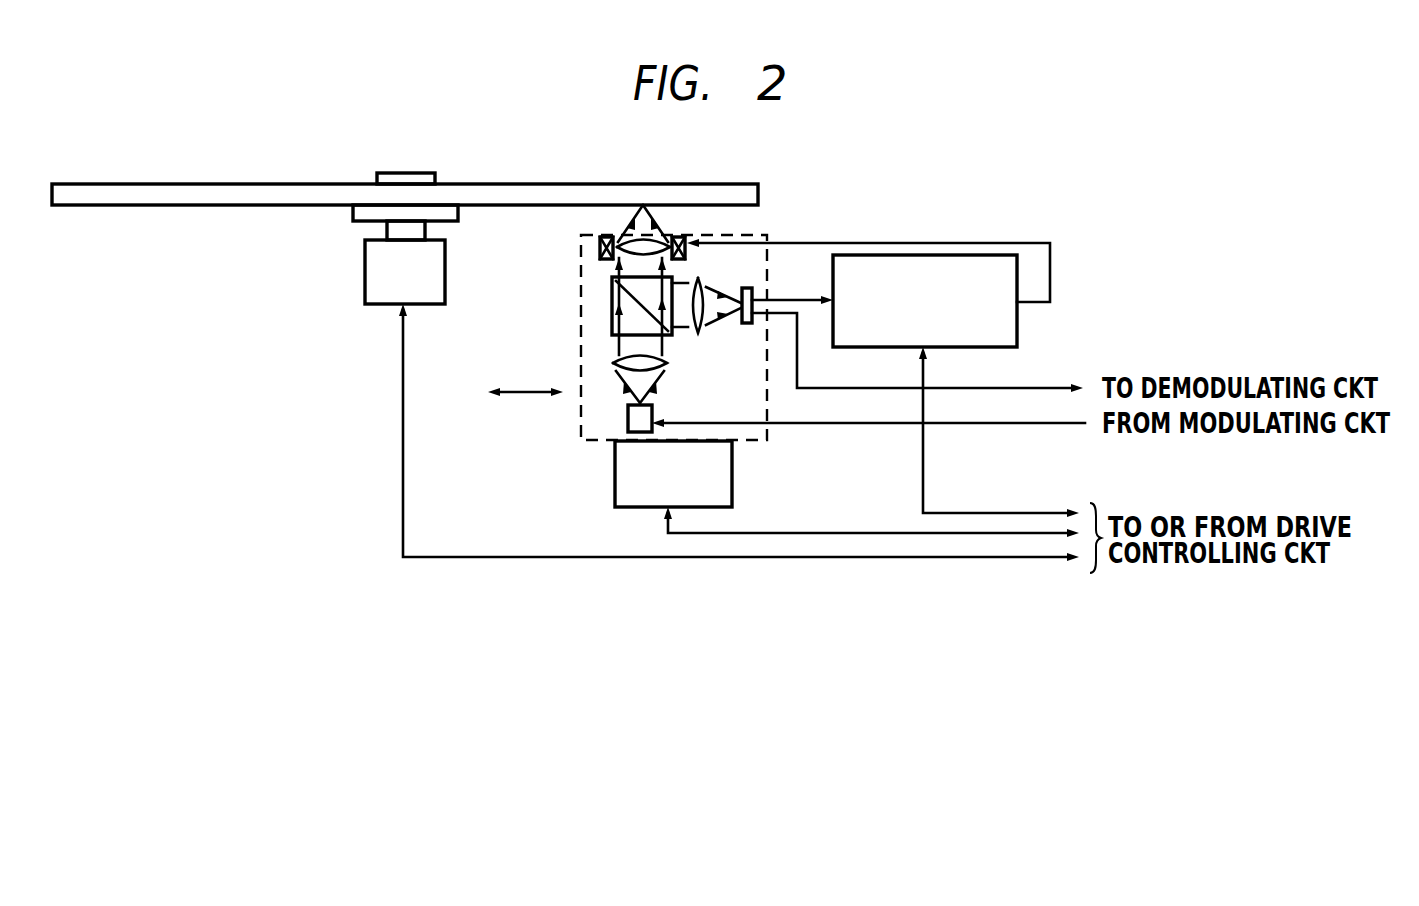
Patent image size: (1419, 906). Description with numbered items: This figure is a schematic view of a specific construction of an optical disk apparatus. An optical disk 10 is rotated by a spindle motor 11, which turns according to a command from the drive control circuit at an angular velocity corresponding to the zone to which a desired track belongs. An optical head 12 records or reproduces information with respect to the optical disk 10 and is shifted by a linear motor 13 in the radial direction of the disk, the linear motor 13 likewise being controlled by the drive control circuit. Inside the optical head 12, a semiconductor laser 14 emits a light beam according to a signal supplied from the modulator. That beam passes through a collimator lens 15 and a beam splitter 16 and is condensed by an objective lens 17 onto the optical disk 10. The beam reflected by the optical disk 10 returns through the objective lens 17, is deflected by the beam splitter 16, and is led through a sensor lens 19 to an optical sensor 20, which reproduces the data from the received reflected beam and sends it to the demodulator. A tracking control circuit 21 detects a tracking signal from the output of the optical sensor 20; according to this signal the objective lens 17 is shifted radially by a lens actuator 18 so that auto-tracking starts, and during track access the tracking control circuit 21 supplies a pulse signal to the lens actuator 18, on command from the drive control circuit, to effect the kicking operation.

The optical disk 10 is at (90, 206).
The spindle motor 11 is at (365, 283).
The optical head 12 is at (581, 278).
The linear motor 13 is at (615, 476).
The semiconductor laser 14 is at (653, 408).
The collimator lens 15 is at (667, 361).
The beam splitter 16 is at (612, 322).
The objective lens 17 is at (668, 240).
The lens actuator 18 is at (686, 257).
The sensor lens 19 is at (704, 332).
The optical sensor 20 is at (750, 288).
The tracking control circuit 21 is at (1017, 328).